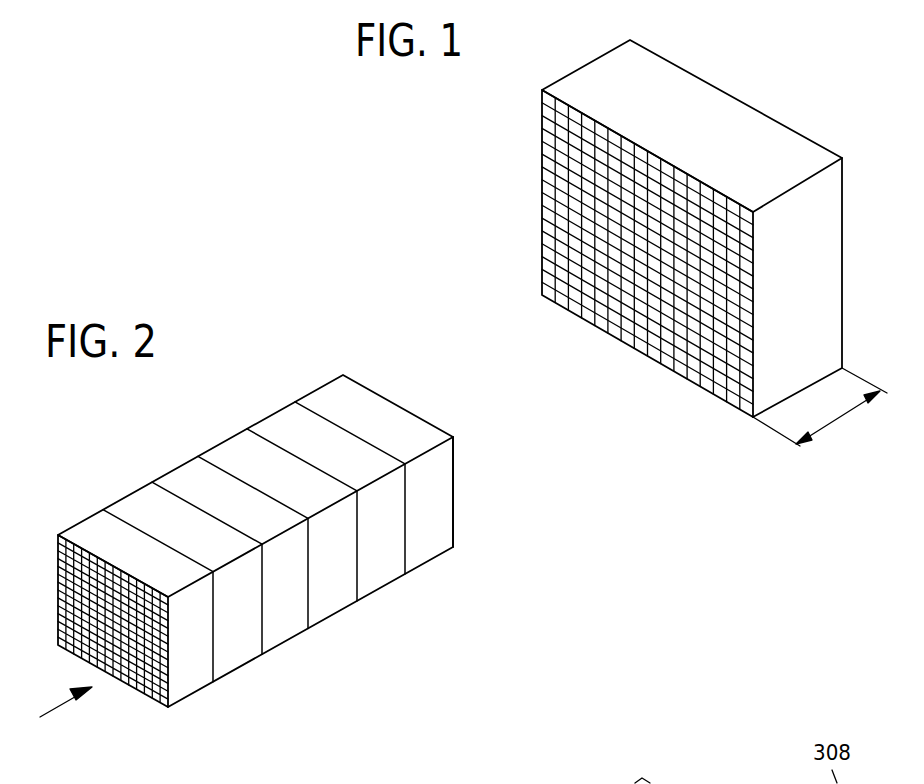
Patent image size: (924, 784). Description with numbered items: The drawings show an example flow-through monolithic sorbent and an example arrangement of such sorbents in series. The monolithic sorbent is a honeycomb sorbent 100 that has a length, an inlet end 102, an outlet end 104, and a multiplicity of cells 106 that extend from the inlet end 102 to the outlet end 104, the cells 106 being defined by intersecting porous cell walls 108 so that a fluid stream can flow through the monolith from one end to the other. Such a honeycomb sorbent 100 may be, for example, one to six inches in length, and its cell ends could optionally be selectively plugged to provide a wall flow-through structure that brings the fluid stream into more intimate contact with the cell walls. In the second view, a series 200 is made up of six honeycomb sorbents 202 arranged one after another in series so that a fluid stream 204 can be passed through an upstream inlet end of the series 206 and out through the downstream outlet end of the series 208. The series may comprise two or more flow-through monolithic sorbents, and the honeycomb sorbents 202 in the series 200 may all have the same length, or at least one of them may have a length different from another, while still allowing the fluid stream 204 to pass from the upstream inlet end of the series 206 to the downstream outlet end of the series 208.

In FIG. 1, the honeycomb sorbent 100 is at (462, 193).
In FIG. 1, the inlet end 102 is at (680, 380).
In FIG. 1, the outlet end 104 is at (778, 121).
In FIG. 1, the cells 106 is at (553, 207).
In FIG. 1, the porous cell walls 108 is at (557, 287).
In FIG. 2, the series 200 is at (153, 443).
In FIG. 2, the honeycomb sorbents 202 is at (447, 513).
In FIG. 2, the fluid stream 204 is at (57, 710).
In FIG. 2, the upstream inlet end of the series 206 is at (93, 560).
In FIG. 2, the downstream outlet end of the series 208 is at (402, 408).